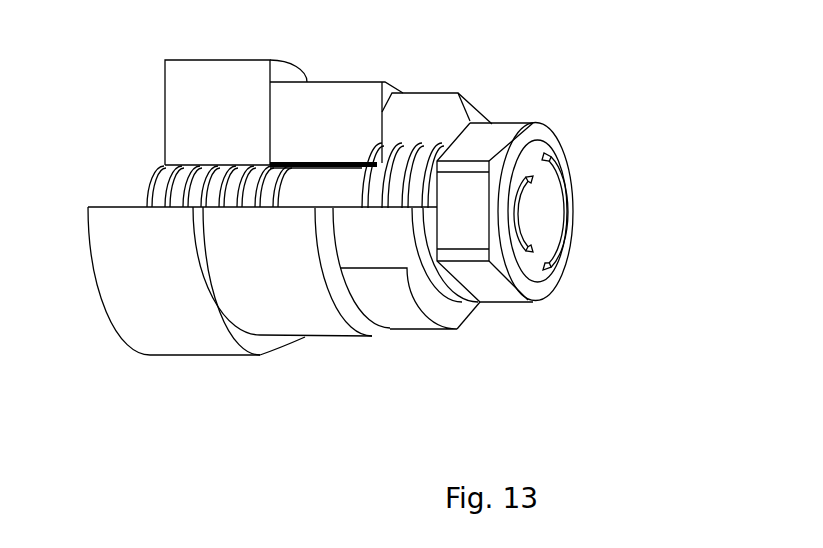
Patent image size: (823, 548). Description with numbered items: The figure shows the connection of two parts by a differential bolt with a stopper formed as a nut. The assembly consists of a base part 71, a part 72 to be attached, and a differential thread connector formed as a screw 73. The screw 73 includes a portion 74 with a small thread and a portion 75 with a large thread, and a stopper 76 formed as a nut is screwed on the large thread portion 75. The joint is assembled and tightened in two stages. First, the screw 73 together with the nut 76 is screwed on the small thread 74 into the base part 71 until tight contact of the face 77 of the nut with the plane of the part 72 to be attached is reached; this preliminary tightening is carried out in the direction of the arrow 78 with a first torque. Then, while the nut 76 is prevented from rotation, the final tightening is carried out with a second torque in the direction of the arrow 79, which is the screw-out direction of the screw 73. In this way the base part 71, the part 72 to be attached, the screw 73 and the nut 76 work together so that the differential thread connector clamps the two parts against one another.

The base part 71 is at (188, 118).
The part to be attached 72 is at (308, 107).
The screw 73 is at (467, 197).
The portion with a small thread 74 is at (193, 167).
The portion with a large thread 75 is at (405, 140).
The stopper formed as a nut 76 is at (402, 292).
The face of the nut 77 is at (381, 137).
The arrow (preliminary tightening direction) 78 is at (523, 215).
The arrow (final tightening direction) 79 is at (575, 217).